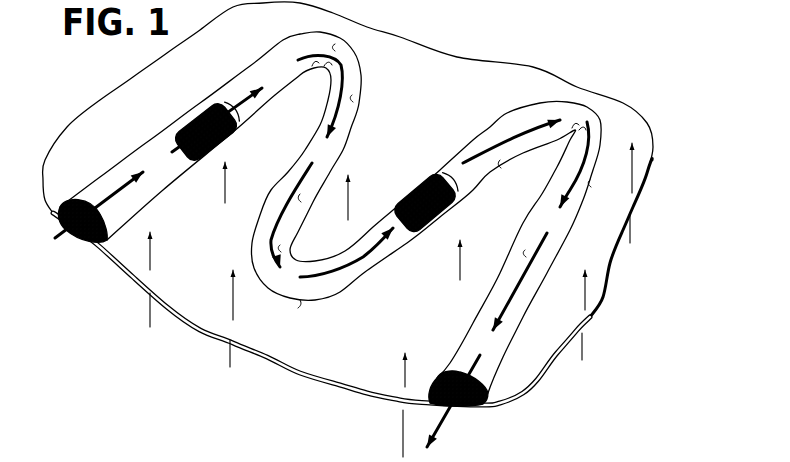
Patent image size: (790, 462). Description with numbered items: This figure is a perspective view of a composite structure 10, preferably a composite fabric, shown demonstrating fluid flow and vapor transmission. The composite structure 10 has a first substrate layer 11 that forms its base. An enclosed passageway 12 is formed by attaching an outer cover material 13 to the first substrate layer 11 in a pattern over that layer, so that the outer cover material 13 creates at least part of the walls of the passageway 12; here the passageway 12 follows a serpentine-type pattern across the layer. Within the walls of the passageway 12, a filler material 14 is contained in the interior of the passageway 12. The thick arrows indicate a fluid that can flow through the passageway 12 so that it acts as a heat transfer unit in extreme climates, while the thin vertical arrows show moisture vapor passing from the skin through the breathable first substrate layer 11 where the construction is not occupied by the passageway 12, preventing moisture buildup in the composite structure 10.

The composite structure 10 is at (637, 107).
The first substrate layer 11 is at (462, 77).
The enclosed passageway 12 is at (368, 57).
The outer cover material 13 is at (143, 145).
The filler material 14 is at (93, 238).